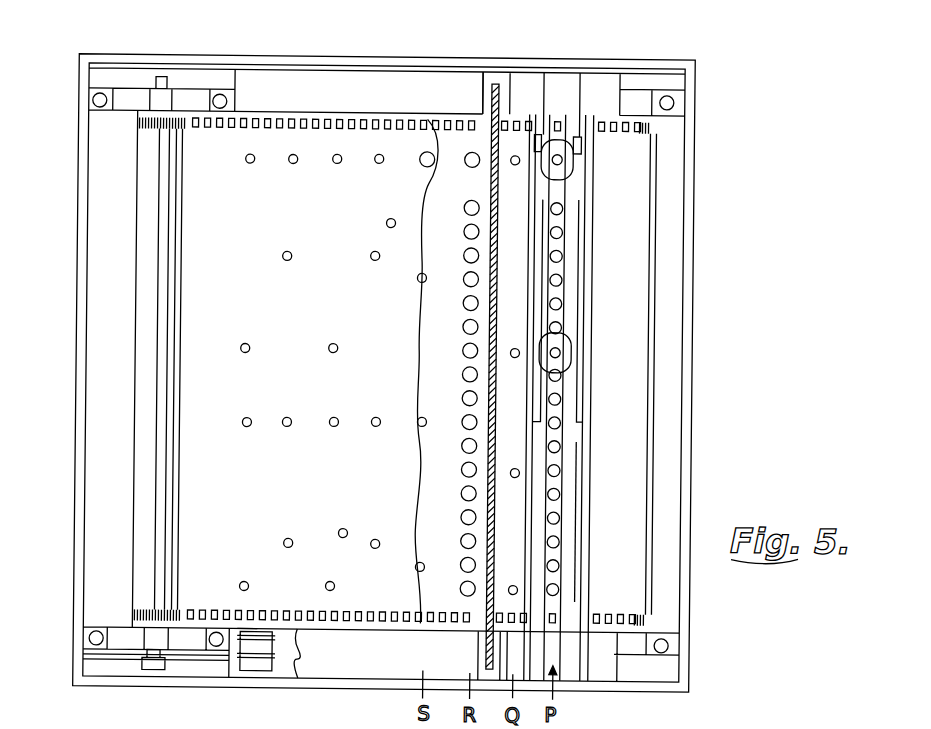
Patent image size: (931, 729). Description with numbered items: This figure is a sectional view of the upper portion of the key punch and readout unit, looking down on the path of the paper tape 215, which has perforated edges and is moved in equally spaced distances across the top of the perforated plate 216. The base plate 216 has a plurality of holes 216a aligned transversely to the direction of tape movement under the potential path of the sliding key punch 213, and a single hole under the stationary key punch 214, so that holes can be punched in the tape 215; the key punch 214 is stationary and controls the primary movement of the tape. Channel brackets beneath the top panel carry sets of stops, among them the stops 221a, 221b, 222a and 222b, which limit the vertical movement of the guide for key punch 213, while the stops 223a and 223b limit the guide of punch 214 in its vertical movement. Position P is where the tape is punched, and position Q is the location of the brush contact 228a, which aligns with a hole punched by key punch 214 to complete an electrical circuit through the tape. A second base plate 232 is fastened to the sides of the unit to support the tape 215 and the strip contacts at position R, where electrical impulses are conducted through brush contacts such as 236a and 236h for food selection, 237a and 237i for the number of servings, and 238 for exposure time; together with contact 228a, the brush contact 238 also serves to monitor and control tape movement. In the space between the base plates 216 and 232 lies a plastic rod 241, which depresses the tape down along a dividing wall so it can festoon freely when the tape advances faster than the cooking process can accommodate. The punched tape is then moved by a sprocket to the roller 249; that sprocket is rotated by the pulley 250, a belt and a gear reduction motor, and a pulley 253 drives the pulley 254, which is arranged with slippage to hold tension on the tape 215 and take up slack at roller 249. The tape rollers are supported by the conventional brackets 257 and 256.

The key punch 213 is at (558, 350).
The key punch 214 is at (559, 161).
The paper tape 215 is at (247, 308).
The perforated plate 216 is at (605, 85).
The holes 216a is at (561, 490).
The stop 221a is at (462, 512).
The stop 221b is at (580, 553).
The stop 222a is at (537, 322).
The stop 222b is at (575, 388).
The stop 223a is at (533, 145).
The stop 223b is at (580, 148).
The brush contact 228a is at (511, 163).
The second base plate 232 is at (302, 88).
The brush contact 236a is at (462, 589).
The brush contact 236h is at (462, 424).
The brush contact 237a is at (461, 207).
The brush contact 237i is at (462, 397).
The brush contact 238 is at (450, 168).
The plastic rod 241 is at (485, 99).
The roller 249 is at (153, 411).
The pulley 250 is at (250, 630).
The pulley 253 is at (273, 666).
The pulley 254 is at (150, 663).
The bracket 256 is at (126, 106).
The bracket 257 is at (672, 100).